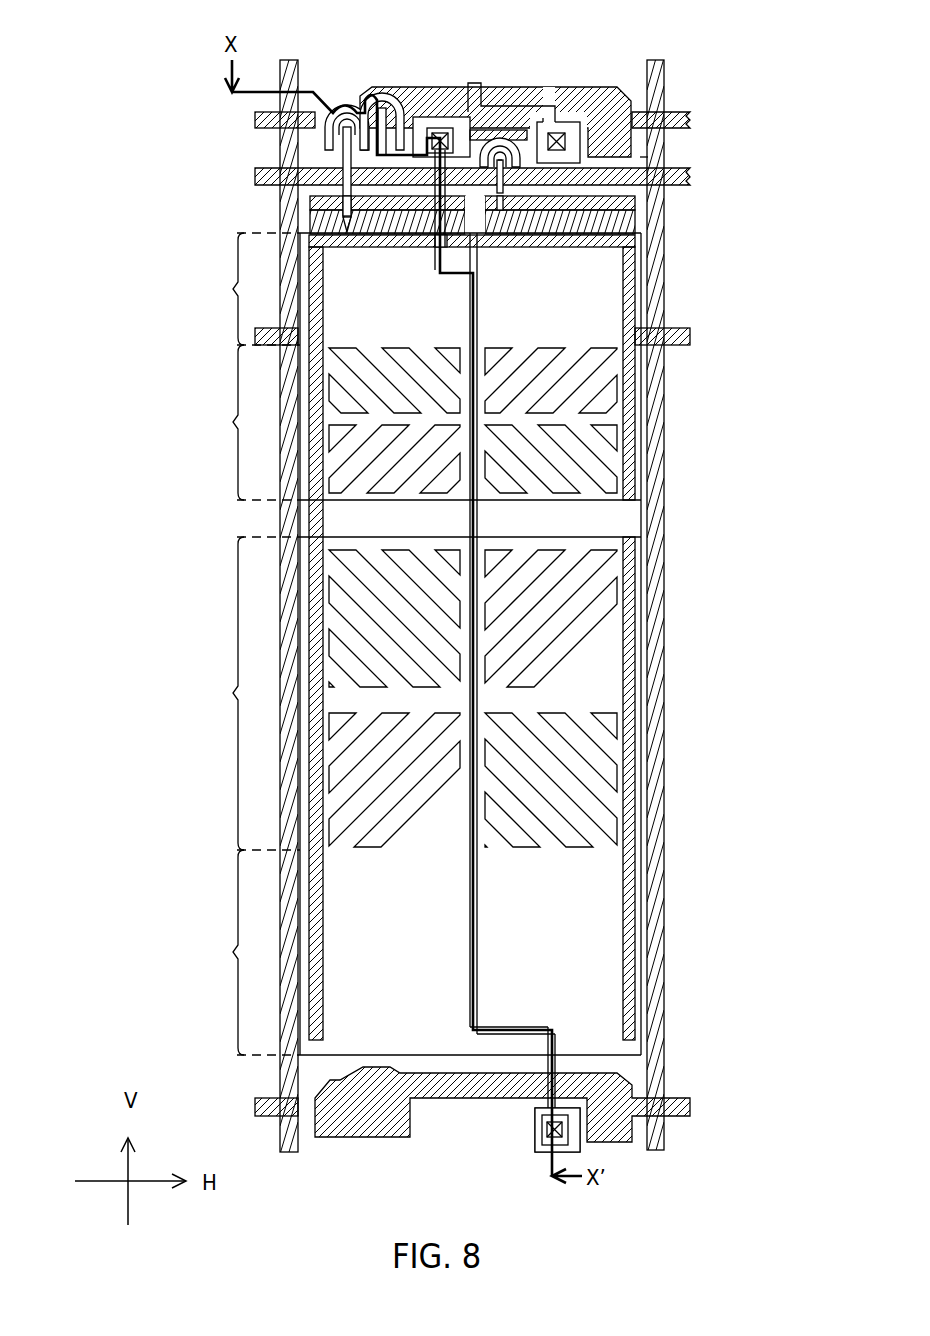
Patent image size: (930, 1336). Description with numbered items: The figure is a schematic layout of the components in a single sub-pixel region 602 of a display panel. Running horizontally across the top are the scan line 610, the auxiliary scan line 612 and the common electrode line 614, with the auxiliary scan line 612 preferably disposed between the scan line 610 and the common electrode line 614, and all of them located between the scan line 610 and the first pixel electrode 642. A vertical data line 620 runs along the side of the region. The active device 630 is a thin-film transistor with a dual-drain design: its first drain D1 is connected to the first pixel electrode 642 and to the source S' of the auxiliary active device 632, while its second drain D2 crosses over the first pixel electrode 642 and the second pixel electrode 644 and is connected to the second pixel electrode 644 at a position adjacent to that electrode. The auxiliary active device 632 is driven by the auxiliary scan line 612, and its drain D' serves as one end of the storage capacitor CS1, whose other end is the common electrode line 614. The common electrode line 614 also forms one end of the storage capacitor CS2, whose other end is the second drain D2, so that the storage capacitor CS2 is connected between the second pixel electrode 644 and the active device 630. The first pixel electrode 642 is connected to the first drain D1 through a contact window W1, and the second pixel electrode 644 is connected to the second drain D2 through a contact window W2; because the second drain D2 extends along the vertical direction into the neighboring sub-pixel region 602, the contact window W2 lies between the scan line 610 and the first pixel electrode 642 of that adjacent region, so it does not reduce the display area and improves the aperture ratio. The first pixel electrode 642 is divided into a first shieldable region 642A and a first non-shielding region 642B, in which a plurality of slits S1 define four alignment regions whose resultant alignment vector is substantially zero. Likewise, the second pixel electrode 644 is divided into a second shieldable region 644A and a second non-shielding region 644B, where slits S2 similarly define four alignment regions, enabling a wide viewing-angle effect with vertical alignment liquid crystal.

The sub-pixel region 602 is at (784, 1227).
The scan line 610 is at (432, 88).
The auxiliary scan line 612 is at (322, 168).
The common electrode line 614 is at (318, 204).
The data line 620 is at (294, 72).
The active device 630 is at (292, 118).
The auxiliary active device 632 is at (505, 133).
The first pixel electrode 642 is at (615, 507).
The second pixel electrode 644 is at (615, 530).
The first shieldable region 642A is at (211, 289).
The first non-shielding region 642B is at (211, 422).
The second shieldable region 644A is at (211, 952).
The second non-shielding region 644B is at (211, 693).
The first drain D1 is at (380, 100).
The second drain D2 is at (335, 125).
The drain of the auxiliary active device D' is at (685, 157).
The source of the auxiliary active device S' is at (508, 101).
The slits S1 is at (600, 380).
The slits S2 is at (598, 634).
The storage capacitor CS1 is at (605, 221).
The storage capacitor CS2 is at (352, 228).
The contact window W1 is at (447, 128).
The contact window W2 is at (559, 130).